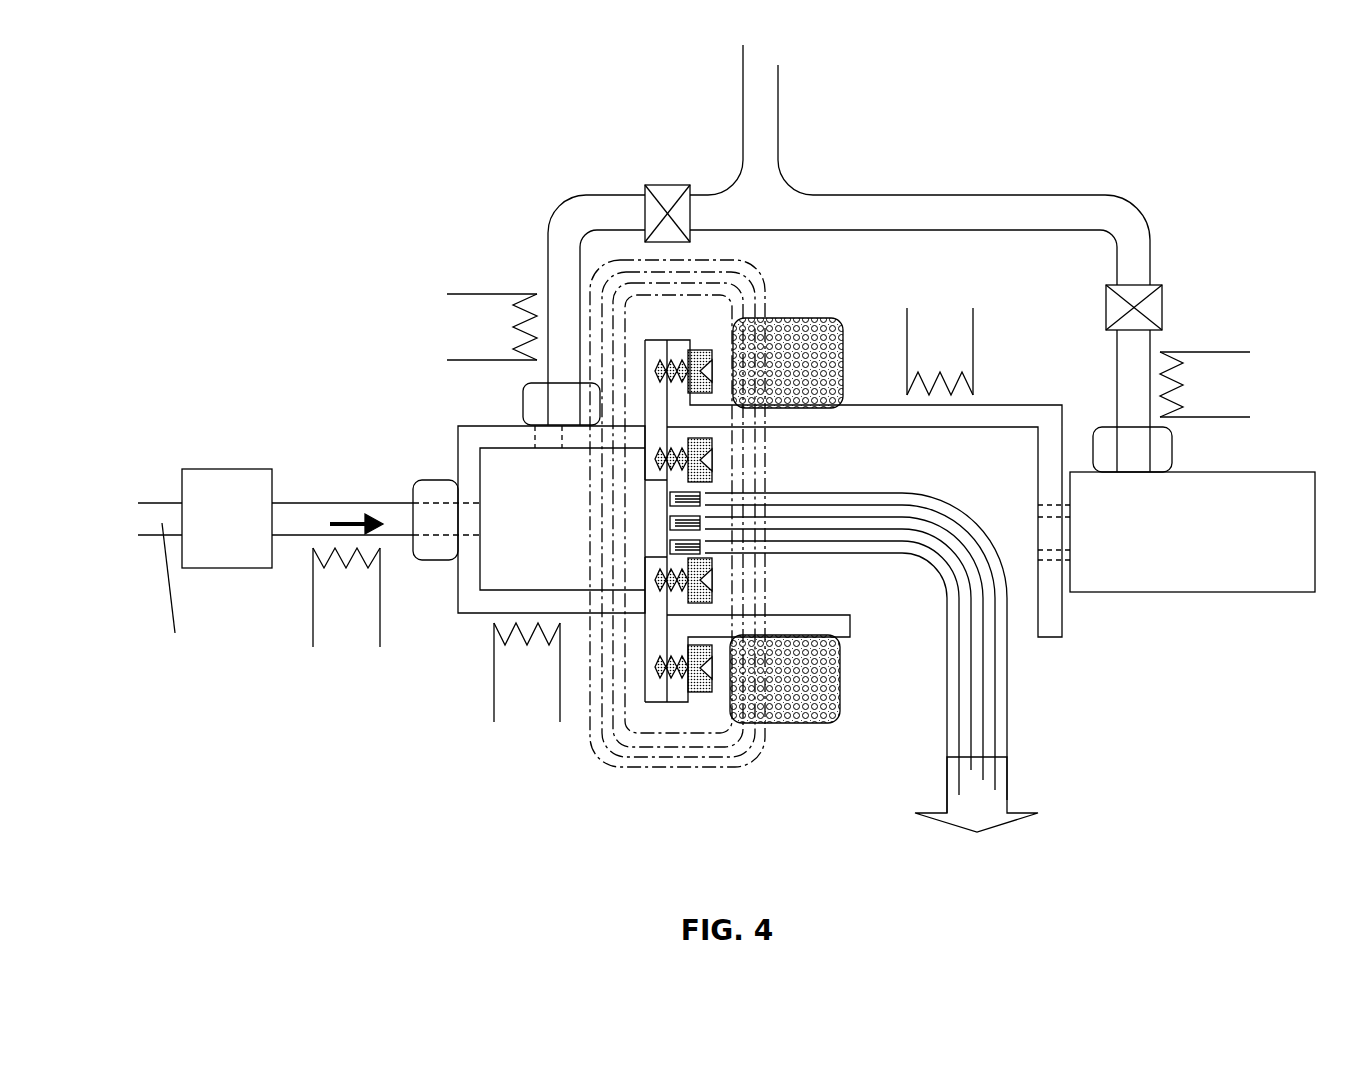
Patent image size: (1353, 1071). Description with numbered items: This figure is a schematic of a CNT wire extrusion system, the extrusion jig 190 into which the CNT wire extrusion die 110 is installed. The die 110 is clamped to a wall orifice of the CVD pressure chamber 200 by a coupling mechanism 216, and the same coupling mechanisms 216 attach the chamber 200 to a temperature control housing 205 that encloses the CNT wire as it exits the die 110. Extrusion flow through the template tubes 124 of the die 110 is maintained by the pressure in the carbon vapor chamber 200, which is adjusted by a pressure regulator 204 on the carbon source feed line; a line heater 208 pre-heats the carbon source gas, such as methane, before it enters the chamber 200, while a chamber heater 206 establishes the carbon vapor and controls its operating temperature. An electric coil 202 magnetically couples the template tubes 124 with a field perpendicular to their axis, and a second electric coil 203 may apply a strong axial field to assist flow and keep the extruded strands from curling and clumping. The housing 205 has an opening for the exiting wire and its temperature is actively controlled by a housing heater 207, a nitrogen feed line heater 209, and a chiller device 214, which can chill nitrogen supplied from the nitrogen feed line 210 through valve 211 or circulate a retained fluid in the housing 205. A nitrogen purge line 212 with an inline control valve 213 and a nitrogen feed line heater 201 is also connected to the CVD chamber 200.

The extrusion jig 190 is at (268, 178).
The CVD pressure chamber 200 is at (505, 480).
The nitrogen feed line heater 201 is at (463, 328).
The electric coil 202 is at (728, 290).
The electric coil 203 is at (797, 690).
The pressure regulator 204 is at (232, 493).
The temperature control housing 205 is at (1050, 615).
The chamber heater 206 is at (515, 690).
The housing heater 207 is at (945, 318).
The line heater 208 is at (350, 623).
The nitrogen feed line heater 209 is at (1230, 383).
The nitrogen feed line 210 is at (1077, 209).
The valve 211 is at (1163, 298).
The nitrogen purge line 212 is at (570, 230).
The inline control valve 213 is at (652, 180).
The chiller device 214 is at (1218, 568).
The coupling mechanism 216 is at (703, 348).
The CNT wire extrusion die 110 is at (702, 517).
The template tubes 124 is at (918, 681).